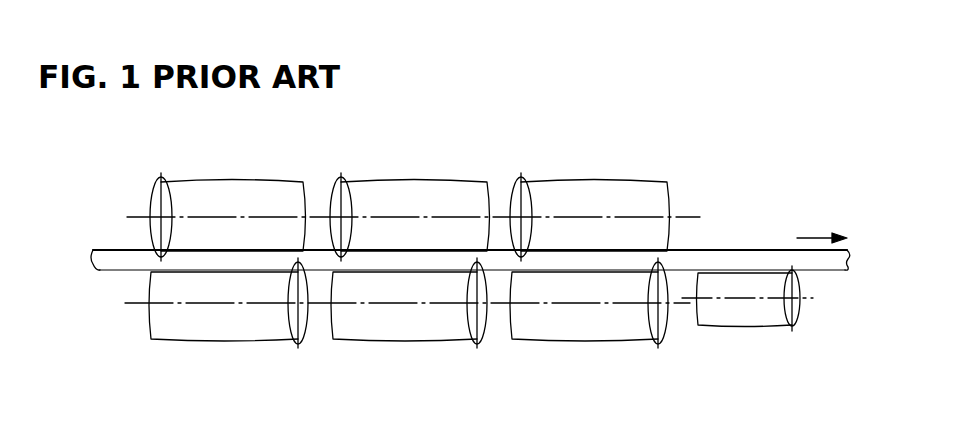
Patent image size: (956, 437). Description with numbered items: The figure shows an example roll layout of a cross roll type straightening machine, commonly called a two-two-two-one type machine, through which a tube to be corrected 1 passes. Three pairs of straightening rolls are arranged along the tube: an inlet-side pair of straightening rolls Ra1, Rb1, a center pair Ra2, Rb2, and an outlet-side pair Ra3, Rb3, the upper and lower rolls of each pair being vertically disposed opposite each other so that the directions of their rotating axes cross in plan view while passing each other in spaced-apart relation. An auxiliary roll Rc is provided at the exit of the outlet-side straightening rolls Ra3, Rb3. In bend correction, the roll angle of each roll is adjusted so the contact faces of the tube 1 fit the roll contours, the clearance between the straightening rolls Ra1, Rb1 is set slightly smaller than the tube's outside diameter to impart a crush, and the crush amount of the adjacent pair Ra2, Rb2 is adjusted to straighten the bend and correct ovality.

The tube to be corrected 1 is at (744, 261).
The inlet-side upper straightening roll Ra1 is at (230, 198).
The center upper straightening roll Ra2 is at (408, 198).
The outlet-side upper straightening roll Ra3 is at (590, 198).
The inlet-side lower straightening roll Rb1 is at (230, 323).
The center lower straightening roll Rb2 is at (408, 323).
The outlet-side lower straightening roll Rb3 is at (589, 323).
The auxiliary roll Rc is at (745, 310).